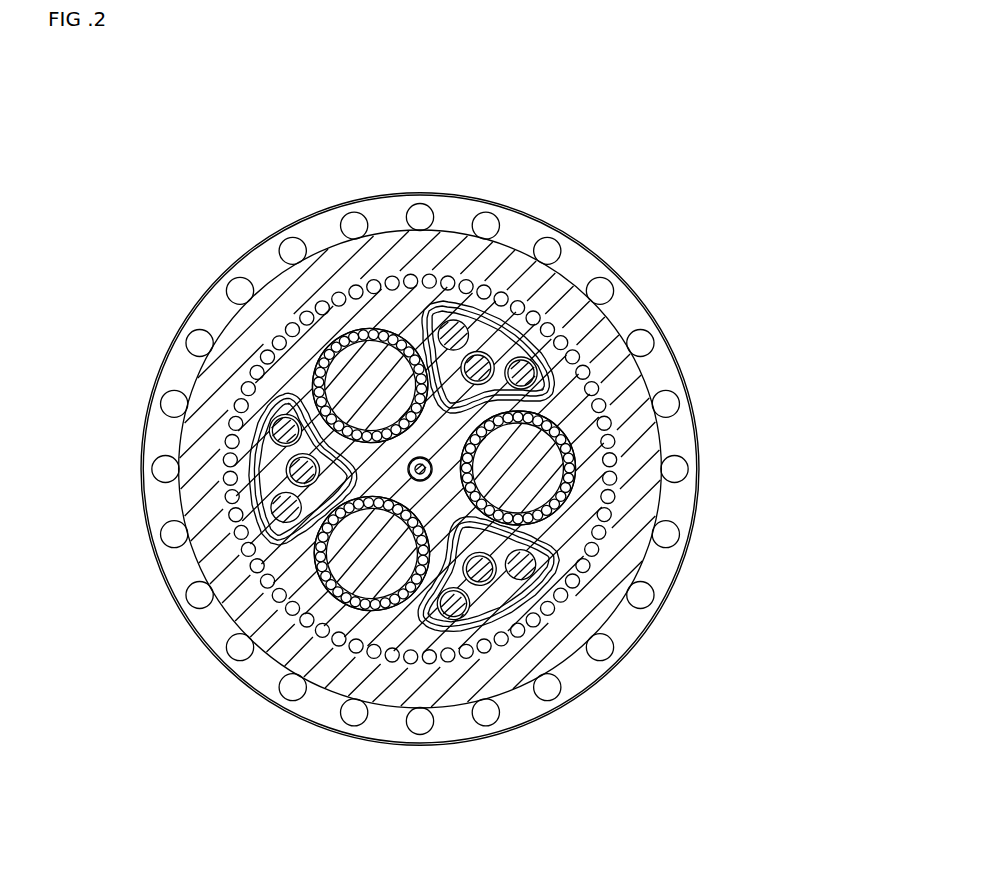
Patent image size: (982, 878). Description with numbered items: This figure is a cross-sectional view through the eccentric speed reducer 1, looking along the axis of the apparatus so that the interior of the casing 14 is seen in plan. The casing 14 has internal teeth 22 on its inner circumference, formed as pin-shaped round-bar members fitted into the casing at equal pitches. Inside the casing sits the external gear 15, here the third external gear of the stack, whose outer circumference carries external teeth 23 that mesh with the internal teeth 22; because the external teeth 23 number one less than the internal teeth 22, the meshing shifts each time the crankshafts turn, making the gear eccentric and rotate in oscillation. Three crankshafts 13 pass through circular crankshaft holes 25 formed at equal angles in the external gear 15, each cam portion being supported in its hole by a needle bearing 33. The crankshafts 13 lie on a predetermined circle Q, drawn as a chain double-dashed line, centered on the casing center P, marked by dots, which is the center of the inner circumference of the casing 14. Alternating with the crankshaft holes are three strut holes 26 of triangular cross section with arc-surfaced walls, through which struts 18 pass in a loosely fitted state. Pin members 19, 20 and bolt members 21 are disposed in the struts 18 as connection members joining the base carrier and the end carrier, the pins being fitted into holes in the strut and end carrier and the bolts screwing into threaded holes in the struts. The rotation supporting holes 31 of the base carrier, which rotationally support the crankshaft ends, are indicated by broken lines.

The eccentric speed reducer 1 is at (607, 197).
The crankshaft 13 is at (383, 340).
The casing 14 is at (563, 623).
The external gear 15 is at (397, 310).
The strut 18 is at (240, 453).
The pin member 19 is at (237, 403).
The pin member 20 is at (434, 302).
The bolt member 21 is at (463, 303).
The internal teeth 22 is at (245, 487).
The external teeth 23 is at (358, 637).
The crankshaft hole 25 is at (353, 348).
The strut hole 26 is at (240, 542).
The rotation supporting hole 31 is at (242, 387).
The needle bearing 33 is at (308, 318).
The casing center P is at (560, 318).
The predetermined circle Q is at (575, 564).